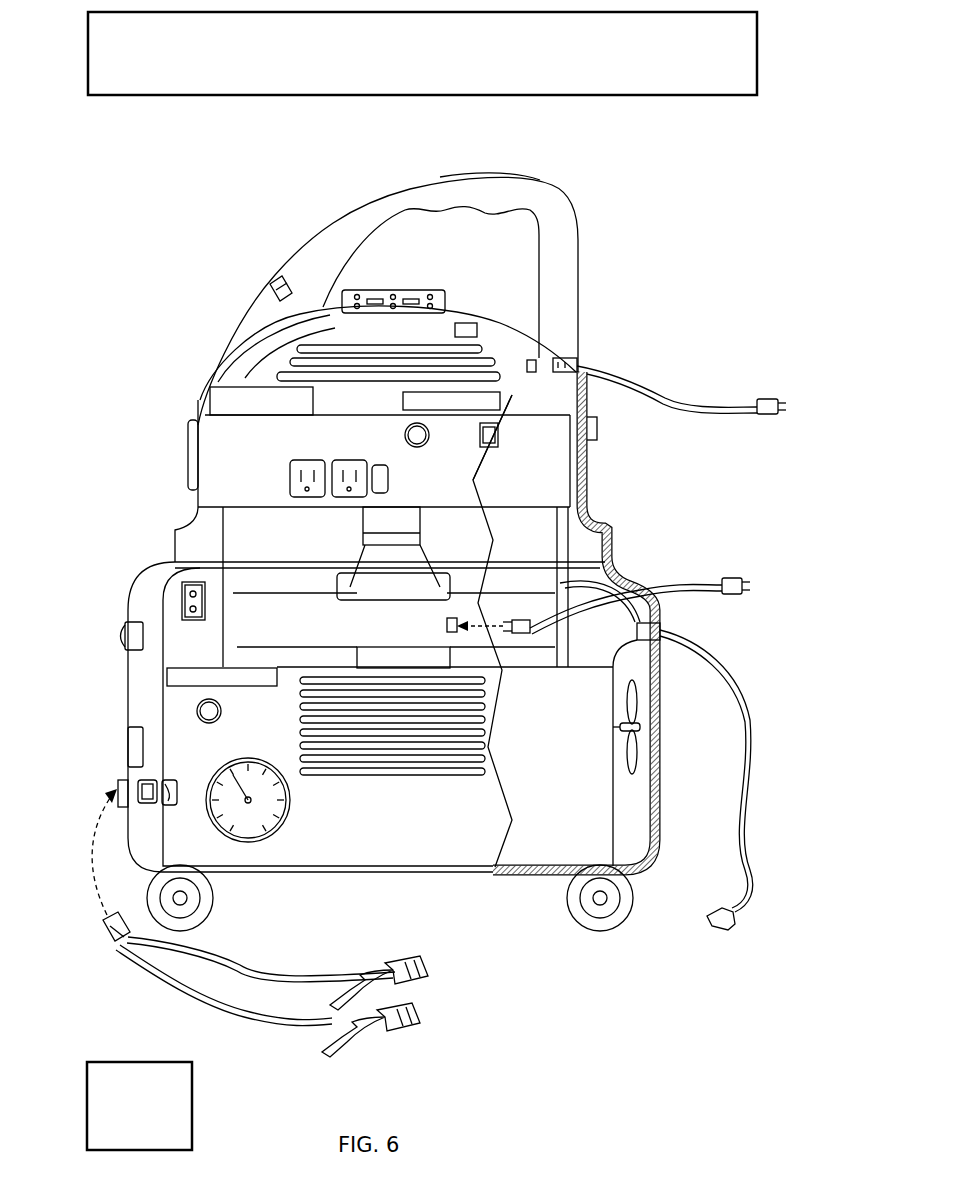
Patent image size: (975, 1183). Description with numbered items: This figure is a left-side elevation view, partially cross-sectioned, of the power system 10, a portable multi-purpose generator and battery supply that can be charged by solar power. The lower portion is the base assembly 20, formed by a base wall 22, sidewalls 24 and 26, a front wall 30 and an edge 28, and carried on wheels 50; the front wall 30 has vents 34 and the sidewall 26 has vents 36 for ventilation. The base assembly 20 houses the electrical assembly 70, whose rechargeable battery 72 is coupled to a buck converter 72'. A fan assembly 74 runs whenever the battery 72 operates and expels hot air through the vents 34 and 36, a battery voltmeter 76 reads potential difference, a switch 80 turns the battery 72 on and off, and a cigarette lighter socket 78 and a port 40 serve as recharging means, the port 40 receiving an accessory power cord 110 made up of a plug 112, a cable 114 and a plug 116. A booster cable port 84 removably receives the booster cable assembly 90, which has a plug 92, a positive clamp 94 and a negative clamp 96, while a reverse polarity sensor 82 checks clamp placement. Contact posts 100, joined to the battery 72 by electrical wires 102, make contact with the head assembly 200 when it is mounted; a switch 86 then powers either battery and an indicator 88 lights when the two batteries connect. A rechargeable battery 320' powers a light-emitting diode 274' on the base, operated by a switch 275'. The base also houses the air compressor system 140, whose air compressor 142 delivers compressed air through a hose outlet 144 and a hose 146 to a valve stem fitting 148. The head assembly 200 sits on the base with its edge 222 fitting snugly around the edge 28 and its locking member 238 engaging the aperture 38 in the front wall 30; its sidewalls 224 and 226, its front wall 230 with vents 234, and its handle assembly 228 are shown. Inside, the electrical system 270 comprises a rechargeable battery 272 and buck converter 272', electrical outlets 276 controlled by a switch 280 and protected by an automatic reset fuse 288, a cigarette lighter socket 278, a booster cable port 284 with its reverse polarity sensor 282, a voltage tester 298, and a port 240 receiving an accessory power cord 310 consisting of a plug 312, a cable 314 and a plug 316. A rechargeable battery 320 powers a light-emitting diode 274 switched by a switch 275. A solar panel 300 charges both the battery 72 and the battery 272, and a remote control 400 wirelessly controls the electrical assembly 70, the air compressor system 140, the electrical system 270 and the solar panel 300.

The power system 10 is at (597, 169).
The base assembly 20 is at (653, 574).
The base wall 22 is at (340, 880).
The sidewall 24 is at (128, 717).
The sidewall 26 is at (660, 688).
The edge 28 is at (170, 568).
The front wall 30 is at (403, 822).
The vents 34 is at (362, 770).
The vents 36 is at (662, 718).
The aperture 38 is at (325, 585).
The port 40 is at (447, 626).
The wheels 50 is at (213, 892).
The electrical assembly 70 is at (630, 818).
The rechargeable battery 72 is at (543, 631).
The buck converter 72' is at (355, 639).
The fan assembly 74 is at (640, 755).
The battery voltmeter 76 is at (237, 770).
The cigarette lighter socket 78 is at (222, 708).
The switch 80 is at (170, 782).
The reverse polarity sensor 82 is at (140, 785).
The booster cable port 84 is at (118, 782).
The switch 86 is at (120, 630).
The indicator 88 is at (182, 600).
The booster cable assembly 90 is at (236, 952).
The plug 92 is at (105, 940).
The positive clamp 94 is at (390, 962).
The negative clamp 96 is at (385, 1015).
The contact posts 100 is at (557, 560).
The electrical wires 102 is at (608, 565).
The accessory power cord 110 is at (703, 579).
The plug 112 is at (510, 620).
The cable 114 is at (693, 590).
The plug 116 is at (742, 592).
The air compressor system 140 is at (662, 662).
The air compressor 142 is at (640, 638).
The hose outlet 144 is at (700, 650).
The hose 146 is at (745, 768).
The valve stem fitting 148 is at (725, 930).
The head assembly 200 is at (338, 206).
The edge 222 is at (235, 560).
The step 224 is at (185, 505).
The hose 226 is at (590, 485).
The handle assembly 228 is at (500, 177).
The front wall 230 is at (375, 412).
The vents 234 is at (423, 349).
The locking member 238 is at (425, 575).
The port 240 is at (533, 360).
The electrical system 270 is at (595, 470).
The rechargeable battery 272 is at (384, 461).
The buck converter 272' is at (561, 436).
The light-emitting diode 274 is at (144, 439).
The light-emitting diode 274' is at (71, 736).
The switch 275 is at (202, 255).
The switch 275' is at (281, 286).
The electrical outlets 276 is at (290, 480).
The cigarette lighter socket 278 is at (405, 435).
The switch 280 is at (372, 470).
The reverse polarity sensor 282 is at (498, 437).
The booster cable port 284 is at (597, 428).
The automatic reset fuse 288 is at (465, 323).
The voltage tester 298 is at (348, 292).
The solar panel 300 is at (422, 53).
The accessory power cord 310 is at (697, 386).
The plug 312 is at (577, 365).
The cable 314 is at (620, 378).
The plug 316 is at (778, 405).
The rechargeable battery 320 is at (345, 353).
The rechargeable battery 320' is at (306, 676).
The remote control 400 is at (139, 1106).